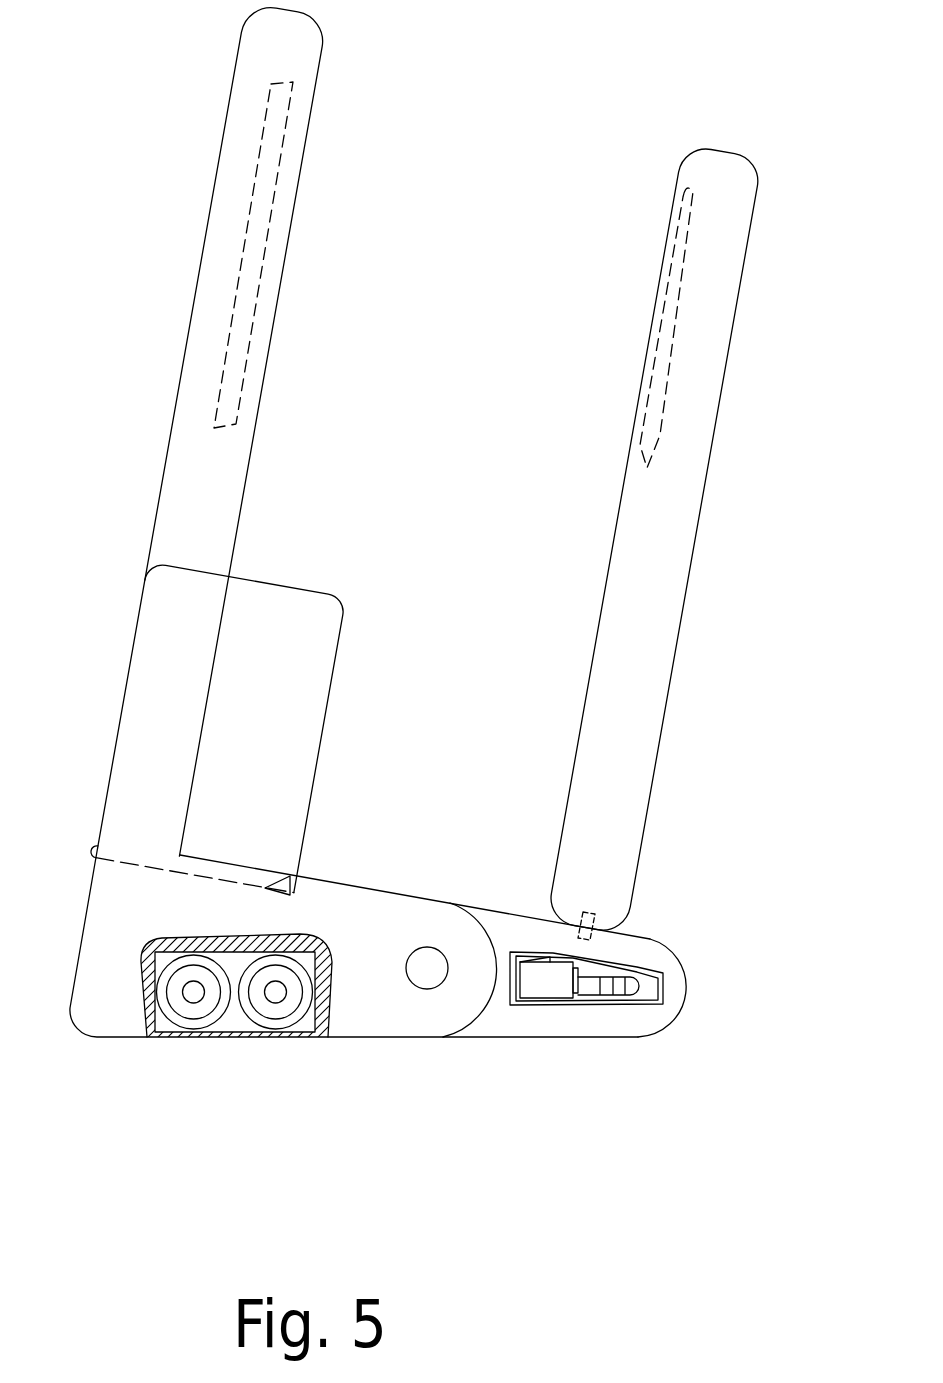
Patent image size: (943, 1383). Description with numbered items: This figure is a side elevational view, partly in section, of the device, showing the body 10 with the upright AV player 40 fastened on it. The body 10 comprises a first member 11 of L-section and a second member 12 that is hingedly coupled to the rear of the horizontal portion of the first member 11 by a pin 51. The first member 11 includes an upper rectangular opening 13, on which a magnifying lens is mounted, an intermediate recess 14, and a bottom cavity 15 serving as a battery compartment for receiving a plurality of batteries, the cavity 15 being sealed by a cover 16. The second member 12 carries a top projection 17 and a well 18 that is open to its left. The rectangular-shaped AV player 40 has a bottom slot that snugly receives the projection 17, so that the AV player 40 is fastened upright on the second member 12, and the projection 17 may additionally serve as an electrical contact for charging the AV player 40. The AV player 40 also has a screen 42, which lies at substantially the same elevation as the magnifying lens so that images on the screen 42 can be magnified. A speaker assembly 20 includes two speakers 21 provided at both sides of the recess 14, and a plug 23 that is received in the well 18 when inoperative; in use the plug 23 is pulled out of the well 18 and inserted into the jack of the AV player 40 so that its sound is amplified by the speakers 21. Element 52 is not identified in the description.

The body 10 is at (372, 1130).
The first member 11 is at (370, 1022).
The second member 12 is at (533, 1027).
The upper rectangular opening 13 is at (255, 247).
The intermediate recess 14 is at (290, 877).
The bottom cavity 15 is at (235, 1025).
The cover 16 is at (175, 1040).
The top projection 17 is at (608, 911).
The well 18 is at (650, 993).
The speaker assembly 20 is at (430, 763).
The speakers 21 is at (300, 763).
The plug 23 is at (530, 967).
The AV player 40 is at (672, 530).
The screen 42 is at (663, 320).
The pin 51 is at (427, 975).
The roller 52 is at (283, 1022).